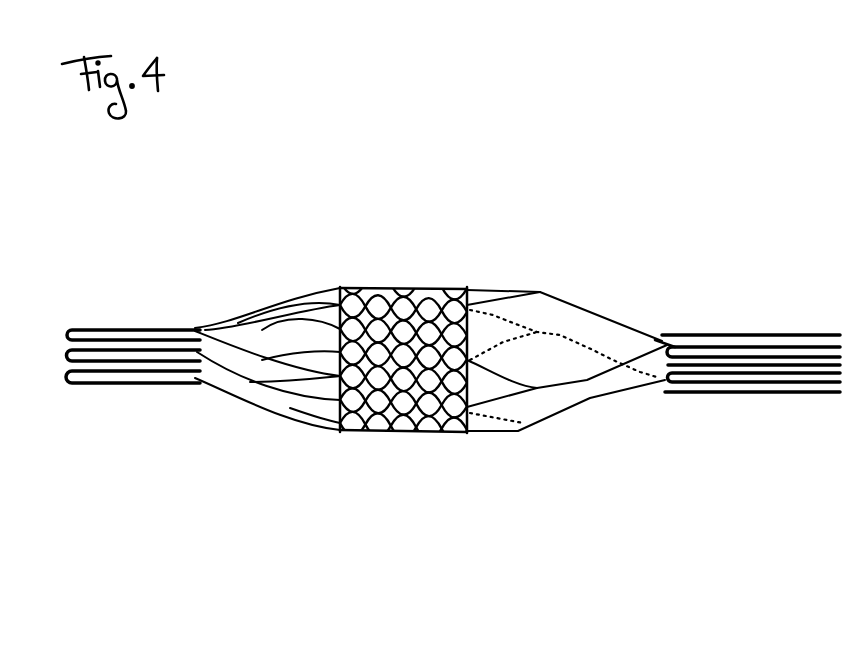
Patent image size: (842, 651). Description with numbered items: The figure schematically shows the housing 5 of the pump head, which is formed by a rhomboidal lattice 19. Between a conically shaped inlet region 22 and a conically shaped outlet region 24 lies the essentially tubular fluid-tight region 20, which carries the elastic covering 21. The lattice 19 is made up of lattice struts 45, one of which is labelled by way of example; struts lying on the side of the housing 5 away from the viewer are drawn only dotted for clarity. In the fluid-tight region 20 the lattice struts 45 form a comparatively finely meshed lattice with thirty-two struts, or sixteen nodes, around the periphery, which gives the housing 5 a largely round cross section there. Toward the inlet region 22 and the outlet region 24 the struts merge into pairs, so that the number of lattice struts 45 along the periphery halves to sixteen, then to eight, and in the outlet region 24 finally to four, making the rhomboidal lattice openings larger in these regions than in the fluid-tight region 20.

The housing 5 is at (453, 311).
The rhomboidal lattice 19 is at (373, 430).
The fluid-tight region 20 is at (411, 215).
The elastic covering 21 is at (440, 428).
The inlet region 22 is at (256, 459).
The outlet region 24 is at (567, 441).
The lattice strut 45 is at (587, 380).